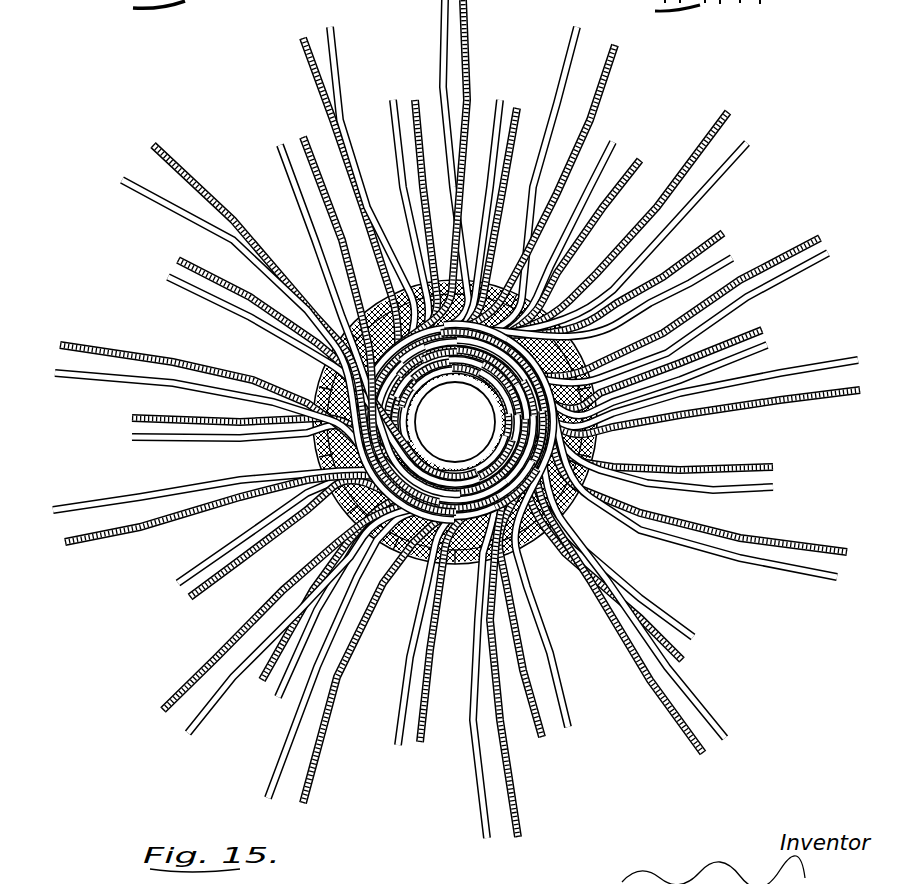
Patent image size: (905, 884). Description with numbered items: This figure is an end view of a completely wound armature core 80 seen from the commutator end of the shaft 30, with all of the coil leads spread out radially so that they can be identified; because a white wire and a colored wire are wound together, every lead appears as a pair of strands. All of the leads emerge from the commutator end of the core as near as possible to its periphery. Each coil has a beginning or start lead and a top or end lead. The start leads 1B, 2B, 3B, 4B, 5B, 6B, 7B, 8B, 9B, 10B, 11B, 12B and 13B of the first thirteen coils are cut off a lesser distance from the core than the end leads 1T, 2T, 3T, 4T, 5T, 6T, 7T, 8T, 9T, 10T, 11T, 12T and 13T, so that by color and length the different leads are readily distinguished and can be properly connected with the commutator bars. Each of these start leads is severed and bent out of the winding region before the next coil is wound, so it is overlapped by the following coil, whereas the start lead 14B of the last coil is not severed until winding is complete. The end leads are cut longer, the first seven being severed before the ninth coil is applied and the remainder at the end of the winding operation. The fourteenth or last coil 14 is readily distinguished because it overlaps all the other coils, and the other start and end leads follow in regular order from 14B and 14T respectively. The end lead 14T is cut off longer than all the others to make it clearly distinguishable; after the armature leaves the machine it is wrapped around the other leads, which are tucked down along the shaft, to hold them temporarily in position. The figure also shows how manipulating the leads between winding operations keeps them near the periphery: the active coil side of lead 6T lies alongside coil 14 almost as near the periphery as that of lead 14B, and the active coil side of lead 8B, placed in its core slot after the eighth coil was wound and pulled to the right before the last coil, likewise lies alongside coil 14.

The armature core end / commutator spider 80 is at (449, 362).
The commutator end of shaft 30 is at (480, 436).
The last coil 14 is at (370, 448).
The end lead of first coil 1T is at (341, 585).
The end lead of second coil 2T is at (273, 494).
The end lead of third coil 3T is at (263, 430).
The end lead of fourth coil 4T is at (283, 330).
The end lead of fifth coil 5T is at (371, 246).
The end lead of sixth coil 6T is at (413, 235).
The end lead of seventh coil 7T is at (495, 225).
The end lead of eighth coil 8T is at (572, 268).
The end lead of ninth coil 9T is at (625, 316).
The end lead of tenth coil 10T is at (651, 397).
The end lead of eleventh coil 11T is at (662, 454).
The end lead of twelfth coil 12T is at (606, 558).
The end lead of thirteenth coil 13T is at (500, 619).
The end lead of last coil 14T is at (404, 620).
The start lead of first coil 1B is at (459, 266).
The start lead of second coil 2B is at (524, 283).
The start lead of third coil 3B is at (558, 318).
The start lead of fourth coil 4B is at (599, 365).
The start lead of fifth coil 5B is at (617, 416).
The start lead of sixth coil 6B is at (586, 515).
The start lead of seventh coil 7B is at (540, 551).
The start lead of eighth coil 8B is at (466, 580).
The start lead of ninth coil 9B is at (380, 569).
The start lead of tenth coil 10B is at (338, 540).
The start lead of eleventh coil 11B is at (298, 459).
The start lead of twelfth coil 12B is at (309, 371).
The start lead of thirteenth coil 13B is at (360, 313).
The start lead of last coil 14B is at (406, 276).